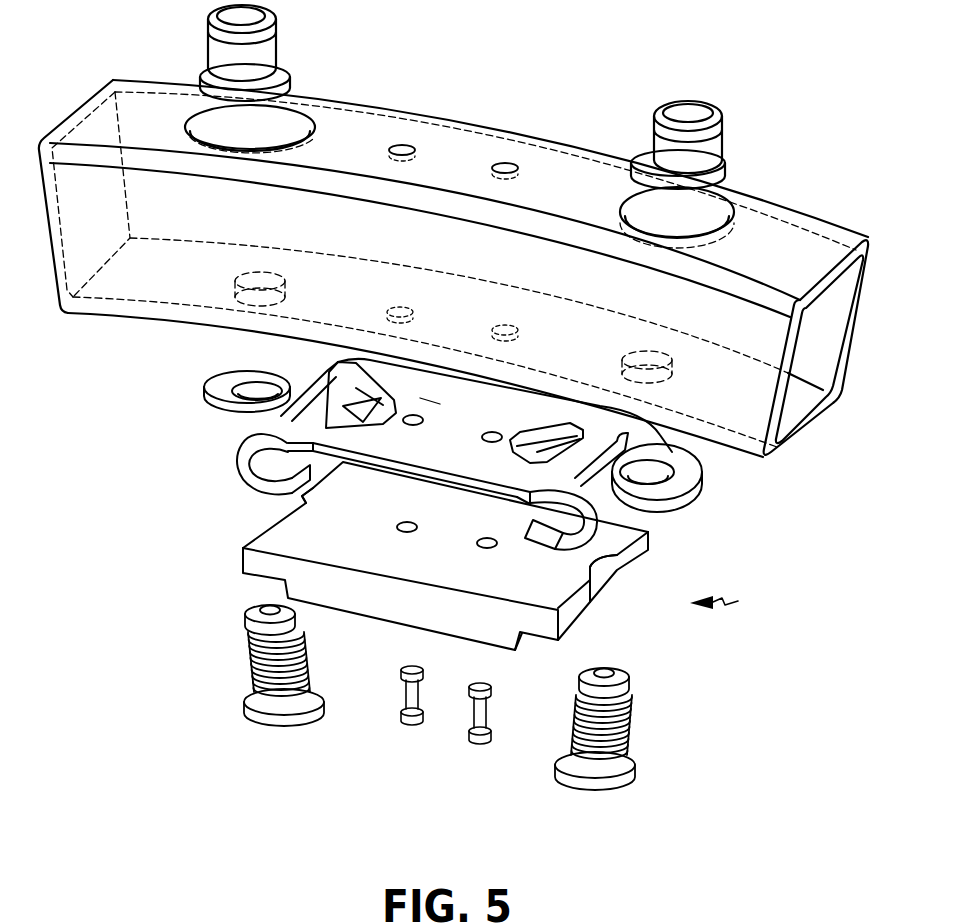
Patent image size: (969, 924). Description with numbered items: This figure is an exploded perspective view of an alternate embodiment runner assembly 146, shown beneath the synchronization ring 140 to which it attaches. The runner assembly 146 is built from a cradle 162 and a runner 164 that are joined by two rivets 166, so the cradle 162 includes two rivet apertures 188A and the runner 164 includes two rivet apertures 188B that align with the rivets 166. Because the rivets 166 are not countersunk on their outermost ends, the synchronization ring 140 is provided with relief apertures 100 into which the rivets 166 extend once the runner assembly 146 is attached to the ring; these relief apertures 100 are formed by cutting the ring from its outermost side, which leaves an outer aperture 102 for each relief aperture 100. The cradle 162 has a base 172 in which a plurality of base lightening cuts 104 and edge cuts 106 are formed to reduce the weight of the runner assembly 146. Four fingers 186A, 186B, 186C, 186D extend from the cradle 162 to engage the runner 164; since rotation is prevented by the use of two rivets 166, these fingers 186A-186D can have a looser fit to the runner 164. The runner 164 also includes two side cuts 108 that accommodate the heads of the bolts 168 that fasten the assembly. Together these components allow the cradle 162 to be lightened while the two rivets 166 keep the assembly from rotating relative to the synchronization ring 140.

The relief apertures 100 is at (398, 306).
The outer aperture 102 is at (403, 145).
The base lightening cuts 104 is at (367, 392).
The edge cuts 106 is at (453, 383).
The side cuts 108 is at (300, 500).
The synchronization ring 140 is at (752, 230).
The runner assembly 146 is at (732, 604).
The cradle 162 is at (693, 497).
The runner 164 is at (645, 557).
The rivets 166 is at (416, 727).
The bolts 168 is at (252, 678).
The base 172 is at (434, 410).
The finger 186A is at (246, 475).
The finger 186B is at (322, 368).
The finger 186C is at (650, 437).
The finger 186D is at (533, 541).
The rivet apertures 188A is at (403, 421).
The rivet apertures 188B is at (404, 527).